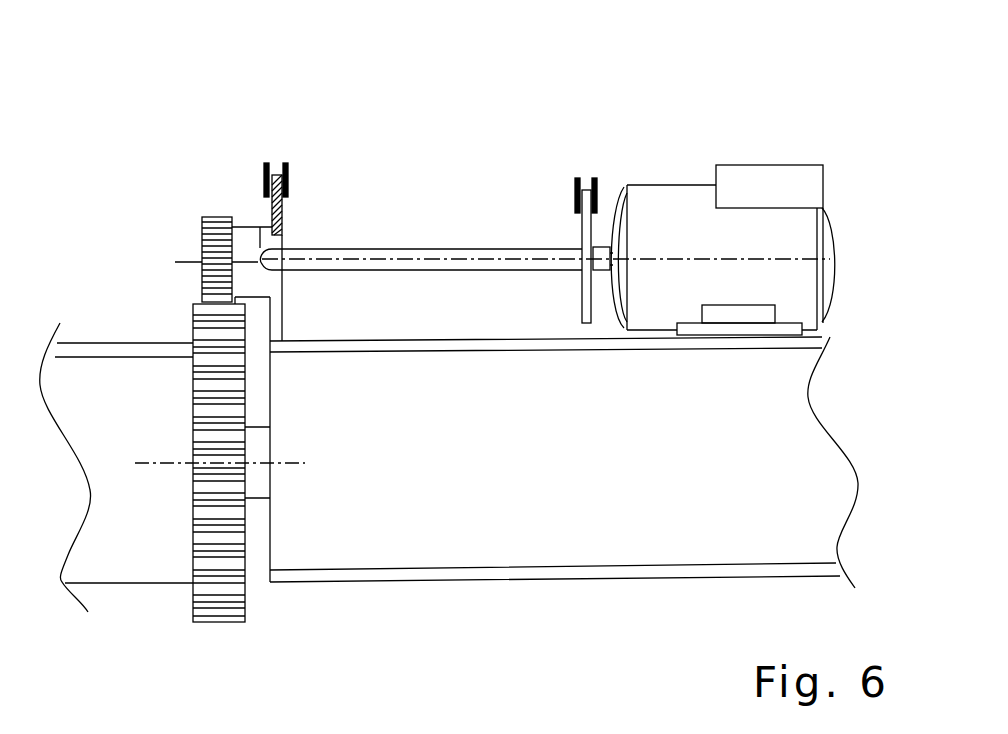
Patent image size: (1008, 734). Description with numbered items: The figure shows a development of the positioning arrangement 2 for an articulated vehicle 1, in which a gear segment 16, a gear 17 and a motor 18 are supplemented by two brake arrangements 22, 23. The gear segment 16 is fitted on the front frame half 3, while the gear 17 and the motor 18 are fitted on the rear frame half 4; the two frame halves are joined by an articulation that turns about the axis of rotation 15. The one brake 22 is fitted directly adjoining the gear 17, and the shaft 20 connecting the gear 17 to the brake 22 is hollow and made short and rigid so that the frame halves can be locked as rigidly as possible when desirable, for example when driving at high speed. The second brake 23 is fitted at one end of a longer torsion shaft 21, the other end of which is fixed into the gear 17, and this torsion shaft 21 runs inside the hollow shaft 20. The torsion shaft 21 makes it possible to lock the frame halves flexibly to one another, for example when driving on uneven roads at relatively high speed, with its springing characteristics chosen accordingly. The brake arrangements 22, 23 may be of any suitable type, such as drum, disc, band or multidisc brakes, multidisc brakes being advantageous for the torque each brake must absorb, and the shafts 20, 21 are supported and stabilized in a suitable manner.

The vehicle 1 is at (85, 70).
The positioning arrangement 2 is at (397, 192).
The front frame half 3 is at (115, 562).
The rear frame half 4 is at (517, 555).
The axis of rotation 15 is at (256, 463).
The gear segment 16 is at (217, 343).
The gear 17 is at (217, 238).
The motor 18 is at (772, 180).
The hollow shaft 20 is at (252, 240).
The torsion shaft 21 is at (430, 257).
The brake arrangement 22 is at (273, 168).
The brake arrangement 23 is at (583, 180).